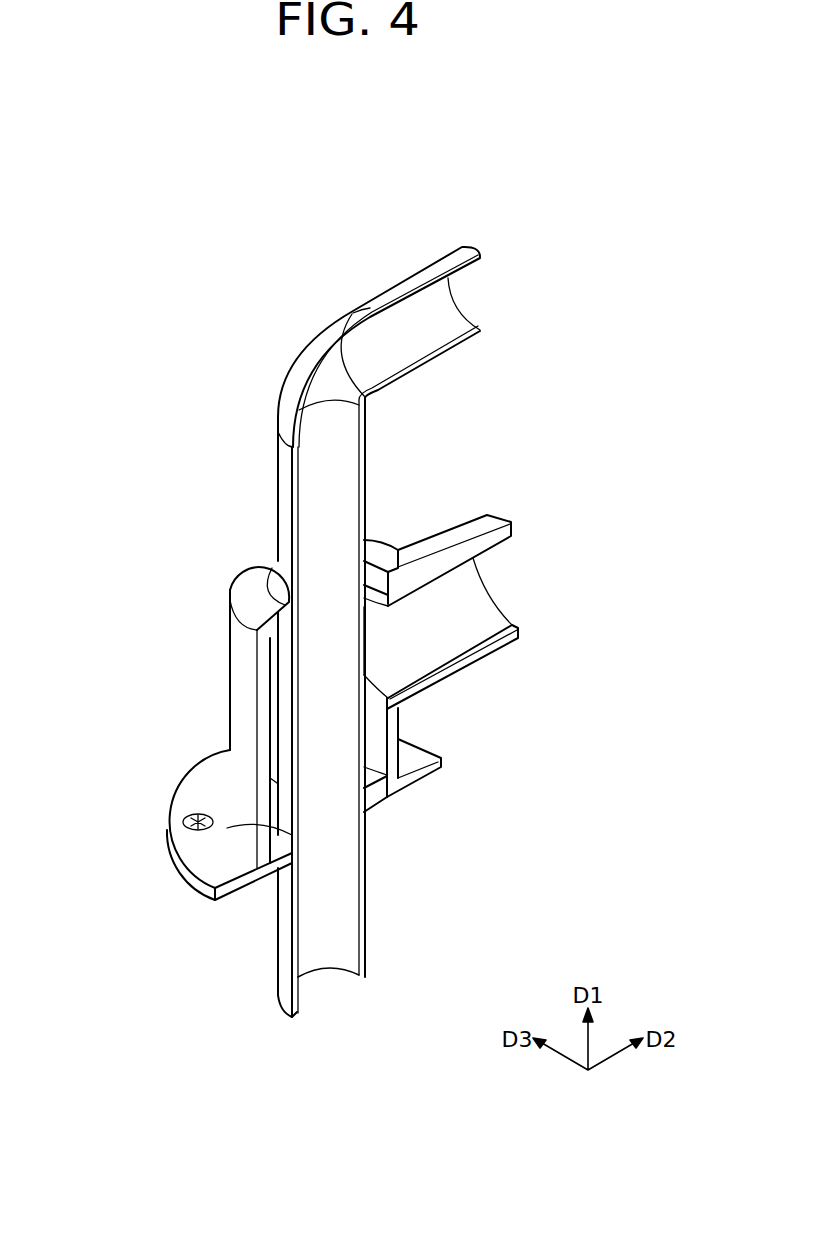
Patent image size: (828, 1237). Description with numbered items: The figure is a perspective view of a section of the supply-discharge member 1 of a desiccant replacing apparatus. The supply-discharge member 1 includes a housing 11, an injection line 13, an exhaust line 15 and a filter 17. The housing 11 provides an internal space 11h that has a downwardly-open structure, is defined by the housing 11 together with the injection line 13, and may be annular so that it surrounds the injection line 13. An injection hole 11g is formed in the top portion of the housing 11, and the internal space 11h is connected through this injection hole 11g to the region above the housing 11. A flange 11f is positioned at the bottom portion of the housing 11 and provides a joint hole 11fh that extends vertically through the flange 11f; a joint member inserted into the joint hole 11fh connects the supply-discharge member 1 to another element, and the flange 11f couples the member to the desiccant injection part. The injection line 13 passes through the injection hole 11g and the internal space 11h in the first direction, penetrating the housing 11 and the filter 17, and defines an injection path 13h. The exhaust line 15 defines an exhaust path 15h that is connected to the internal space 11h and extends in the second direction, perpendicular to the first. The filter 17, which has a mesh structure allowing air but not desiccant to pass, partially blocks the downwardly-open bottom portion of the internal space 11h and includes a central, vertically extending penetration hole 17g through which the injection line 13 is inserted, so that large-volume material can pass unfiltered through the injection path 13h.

The supply-discharge member 1 is at (563, 213).
The injection line 13 is at (316, 348).
The injection path 13h is at (331, 478).
The exhaust line 15 is at (496, 520).
The exhaust path 15h is at (462, 610).
The filter 17 is at (372, 798).
The penetration hole 17g is at (178, 860).
The housing 11 is at (235, 690).
The injection hole 11g is at (272, 568).
The internal space 11h is at (276, 746).
The flange 11f is at (195, 788).
The joint hole 11fh is at (196, 828).